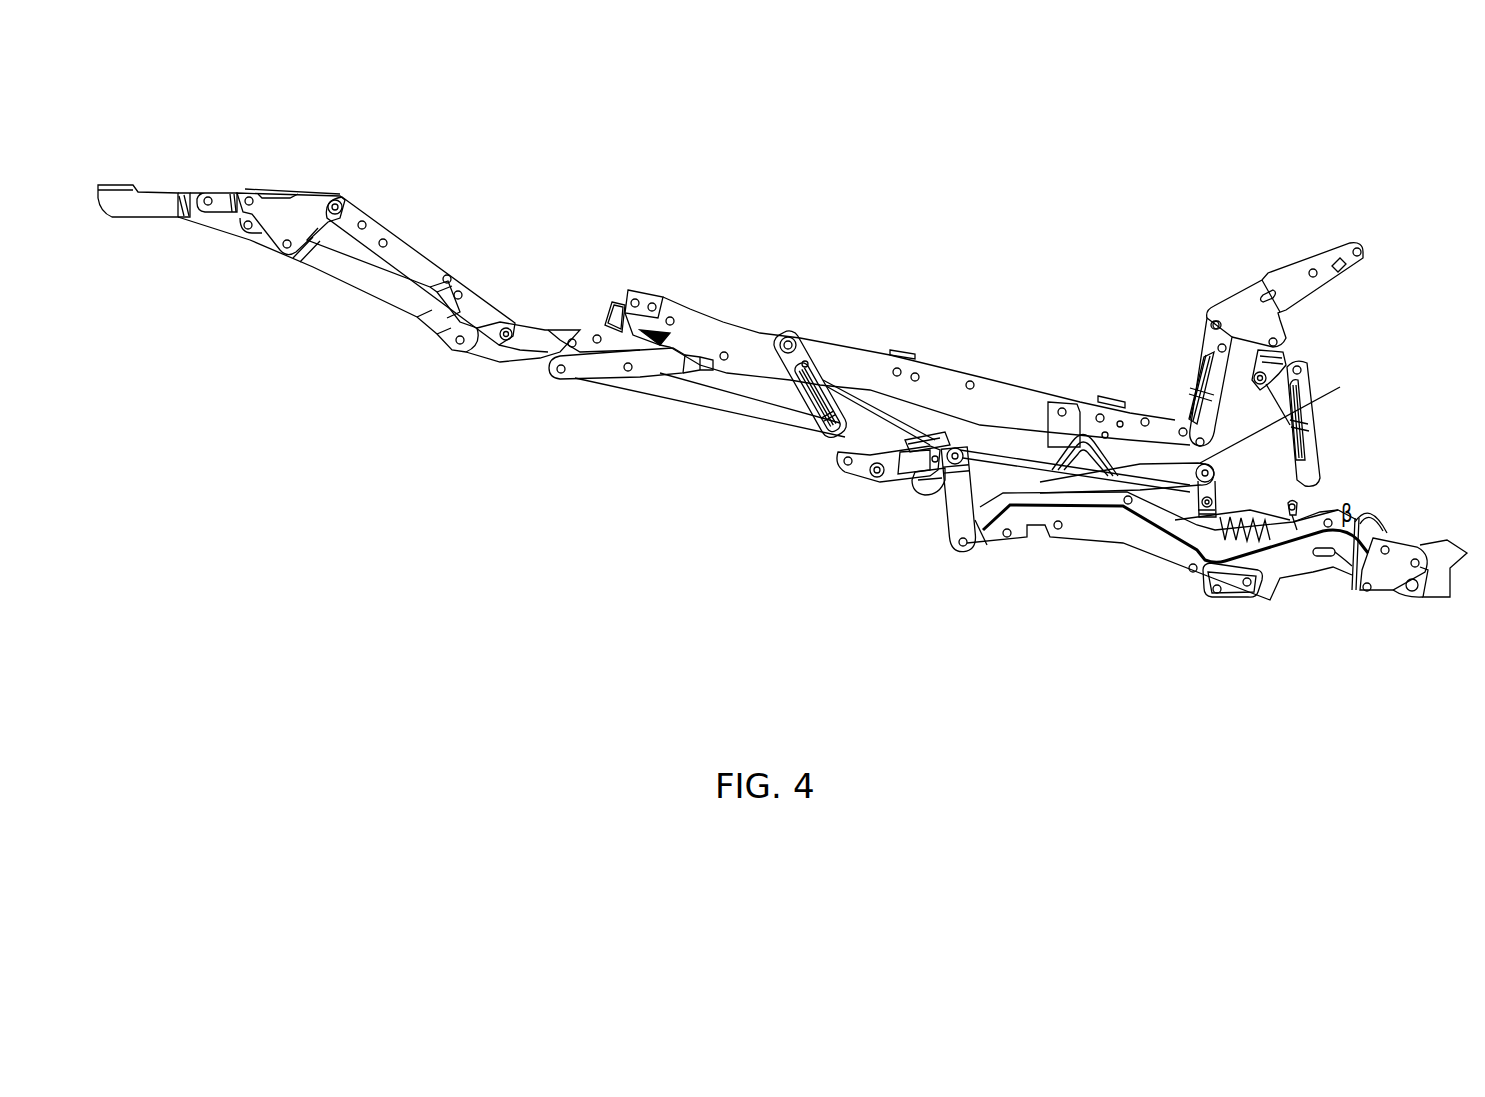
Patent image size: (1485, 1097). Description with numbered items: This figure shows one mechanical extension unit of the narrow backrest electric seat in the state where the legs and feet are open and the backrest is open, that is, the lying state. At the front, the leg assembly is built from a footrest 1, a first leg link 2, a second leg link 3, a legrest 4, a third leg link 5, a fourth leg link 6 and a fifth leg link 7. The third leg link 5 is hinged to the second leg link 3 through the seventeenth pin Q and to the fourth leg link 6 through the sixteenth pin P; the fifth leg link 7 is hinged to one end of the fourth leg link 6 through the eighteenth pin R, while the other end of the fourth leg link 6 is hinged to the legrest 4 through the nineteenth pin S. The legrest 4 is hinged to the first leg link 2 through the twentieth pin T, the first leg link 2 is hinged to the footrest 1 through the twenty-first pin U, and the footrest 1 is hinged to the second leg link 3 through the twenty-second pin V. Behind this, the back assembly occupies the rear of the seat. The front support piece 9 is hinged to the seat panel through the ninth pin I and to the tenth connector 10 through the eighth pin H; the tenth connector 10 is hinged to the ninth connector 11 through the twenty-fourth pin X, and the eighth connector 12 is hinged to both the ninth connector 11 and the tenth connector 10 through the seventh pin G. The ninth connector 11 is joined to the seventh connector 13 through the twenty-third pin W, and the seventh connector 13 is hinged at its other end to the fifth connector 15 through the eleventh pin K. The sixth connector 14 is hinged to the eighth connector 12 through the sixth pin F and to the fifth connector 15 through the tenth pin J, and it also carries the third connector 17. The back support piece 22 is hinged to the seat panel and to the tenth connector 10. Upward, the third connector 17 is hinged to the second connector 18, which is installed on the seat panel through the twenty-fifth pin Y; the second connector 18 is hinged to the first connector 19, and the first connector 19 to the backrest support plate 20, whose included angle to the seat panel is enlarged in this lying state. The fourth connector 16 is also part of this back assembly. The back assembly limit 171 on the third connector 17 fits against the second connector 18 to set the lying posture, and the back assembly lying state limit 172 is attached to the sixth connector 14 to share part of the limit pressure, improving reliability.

The footrest 1 is at (130, 192).
The first leg link 2 is at (222, 195).
The second leg link 3 is at (340, 262).
The legrest 4 is at (290, 204).
The third leg link 5 is at (487, 357).
The fourth leg link 6 is at (412, 258).
The fifth leg link 7 is at (590, 362).
The front support piece 9 is at (812, 400).
The tenth connector 10 is at (860, 462).
The ninth connector 11 is at (912, 470).
The eighth connector 12 is at (960, 502).
The seventh connector 13 is at (1130, 470).
The sixth connector 14 is at (1098, 522).
The fifth connector 15 is at (1210, 525).
The fourth connector 16 is at (1333, 578).
The third connector 17 is at (1340, 573).
The second connector 18 is at (1308, 430).
The first connector 19 is at (1213, 403).
The backrest support plate 20 is at (1287, 277).
The back support piece 22 is at (1072, 415).
The back assembly limit 171 is at (1292, 512).
The back assembly lying state limit 172 is at (1387, 535).
The twenty-first pin U is at (208, 197).
The twentieth pin T is at (251, 198).
The nineteenth pin S is at (340, 204).
The twenty-second pin V is at (245, 230).
The sixteenth pin P is at (508, 328).
The seventeenth pin Q is at (458, 346).
The eighteenth pin R is at (562, 374).
The ninth pin I is at (786, 338).
The twenty-fourth pin X is at (875, 463).
The twenty-third pin W is at (935, 454).
The seventh pin G is at (958, 450).
The eighth pin H is at (843, 463).
The sixth pin F is at (967, 548).
The eleventh pin K is at (1198, 407).
The twenty-fifth pin Y is at (1302, 370).
The tenth pin J is at (1217, 594).